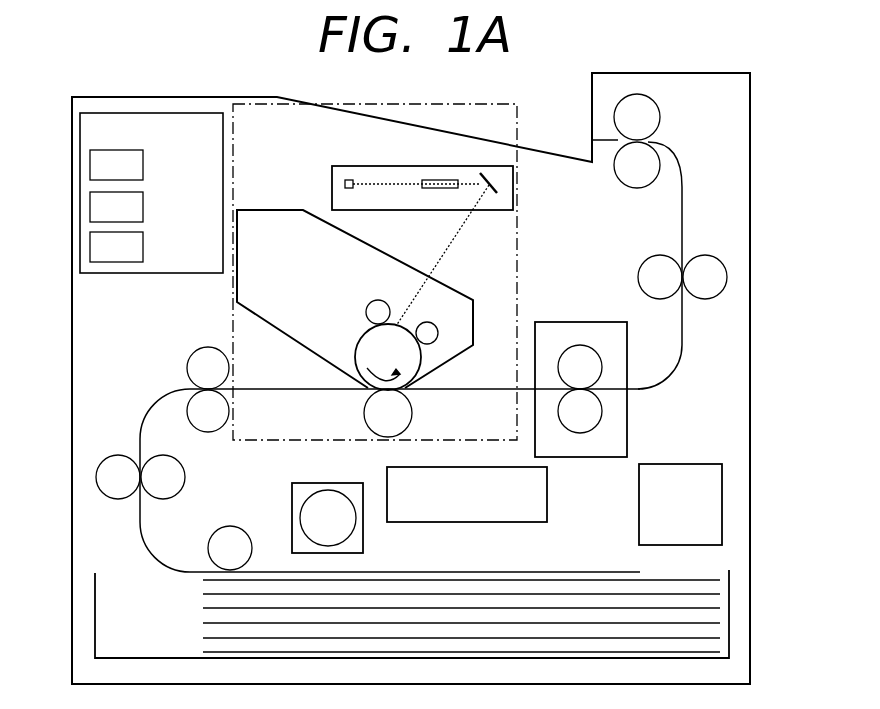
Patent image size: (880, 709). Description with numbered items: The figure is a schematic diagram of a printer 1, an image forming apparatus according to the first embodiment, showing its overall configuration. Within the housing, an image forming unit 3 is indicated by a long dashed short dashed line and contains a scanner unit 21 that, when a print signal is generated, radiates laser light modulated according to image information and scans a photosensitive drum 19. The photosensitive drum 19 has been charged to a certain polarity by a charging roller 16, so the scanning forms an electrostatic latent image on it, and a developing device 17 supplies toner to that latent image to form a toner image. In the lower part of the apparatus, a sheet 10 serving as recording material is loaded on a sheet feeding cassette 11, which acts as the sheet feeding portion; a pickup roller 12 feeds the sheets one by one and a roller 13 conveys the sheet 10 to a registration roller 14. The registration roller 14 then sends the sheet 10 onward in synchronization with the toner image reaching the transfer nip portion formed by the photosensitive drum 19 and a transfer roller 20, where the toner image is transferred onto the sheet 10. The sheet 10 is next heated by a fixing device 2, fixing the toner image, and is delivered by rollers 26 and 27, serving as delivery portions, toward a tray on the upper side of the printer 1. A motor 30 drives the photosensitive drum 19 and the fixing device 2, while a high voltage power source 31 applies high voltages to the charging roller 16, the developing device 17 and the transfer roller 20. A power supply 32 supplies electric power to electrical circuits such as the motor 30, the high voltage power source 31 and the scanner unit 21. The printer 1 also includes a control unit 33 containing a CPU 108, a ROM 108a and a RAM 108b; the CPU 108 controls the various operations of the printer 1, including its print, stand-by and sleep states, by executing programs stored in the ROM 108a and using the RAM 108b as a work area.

The printer 1 is at (676, 73).
The fixing device 2 is at (580, 322).
The image forming unit 3 is at (233, 324).
The sheet 10 is at (593, 578).
The sheet feeding cassette 11 is at (729, 612).
The pickup roller 12 is at (208, 545).
The roller 13 is at (117, 500).
The registration roller 14 is at (186, 368).
The charging roller 16 is at (436, 321).
The developing device 17 is at (368, 302).
The photosensitive drum 19 is at (358, 344).
The transfer roller 20 is at (412, 413).
The scanner unit 21 is at (332, 185).
The roller 26 is at (648, 257).
The roller 27 is at (660, 118).
The motor 30 is at (292, 502).
The high voltage power source 31 is at (435, 523).
The power supply 32 is at (680, 464).
The control unit 33 is at (150, 113).
The CPU 108 is at (143, 165).
The ROM 108a is at (143, 207).
The RAM 108b is at (143, 247).